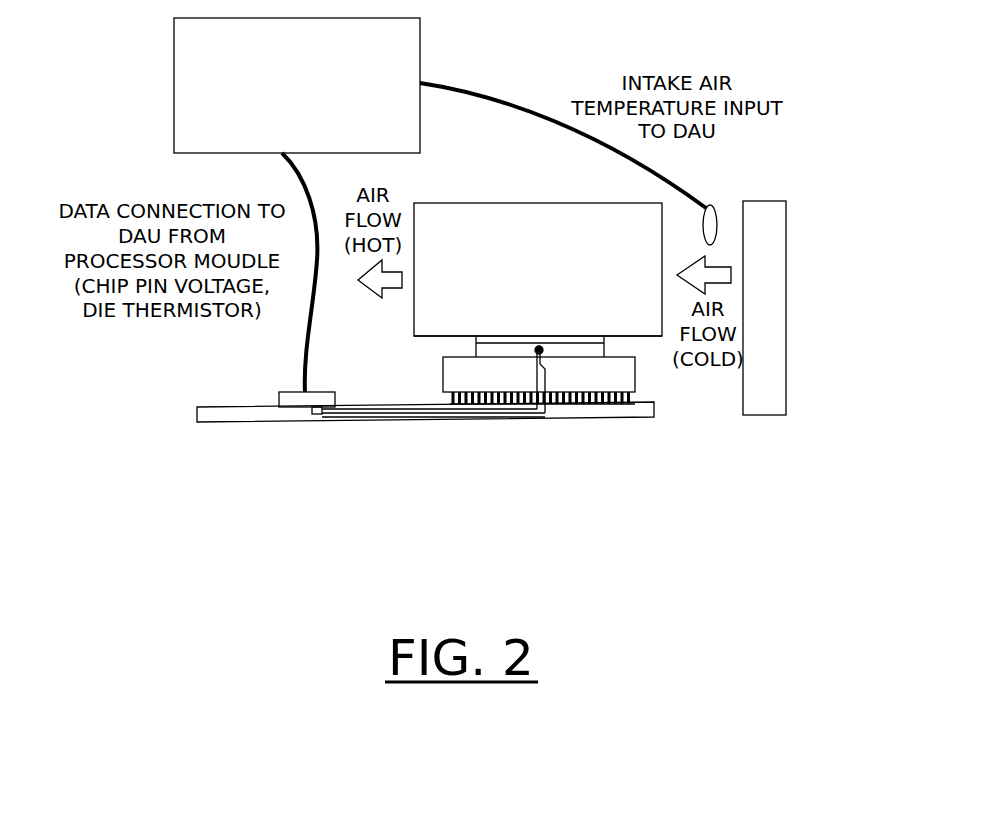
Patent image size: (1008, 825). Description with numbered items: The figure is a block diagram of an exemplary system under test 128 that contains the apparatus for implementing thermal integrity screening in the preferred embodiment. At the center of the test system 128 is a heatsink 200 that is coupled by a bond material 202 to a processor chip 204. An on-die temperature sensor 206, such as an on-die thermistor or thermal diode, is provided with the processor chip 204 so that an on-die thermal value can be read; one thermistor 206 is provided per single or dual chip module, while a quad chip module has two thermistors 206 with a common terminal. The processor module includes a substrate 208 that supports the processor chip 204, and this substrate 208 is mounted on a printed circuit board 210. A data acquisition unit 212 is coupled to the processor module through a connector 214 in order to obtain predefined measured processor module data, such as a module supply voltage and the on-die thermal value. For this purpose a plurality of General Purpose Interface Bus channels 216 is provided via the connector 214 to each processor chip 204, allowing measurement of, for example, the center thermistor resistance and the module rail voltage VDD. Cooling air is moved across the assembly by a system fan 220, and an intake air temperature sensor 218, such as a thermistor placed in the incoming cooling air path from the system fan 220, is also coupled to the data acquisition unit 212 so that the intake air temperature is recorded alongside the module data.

The system under test 128 is at (592, 45).
The heatsink 200 is at (538, 269).
The bond material 202 is at (490, 334).
The processor chip 204 is at (477, 351).
The on-die temperature sensor 206 is at (548, 351).
The substrate 208 is at (624, 373).
The printed circuit board 210 is at (233, 405).
The data acquisition unit 212 is at (297, 85).
The connector 214 is at (305, 409).
The GPIB channels 216 is at (440, 421).
The intake air temperature sensor 218 is at (719, 211).
The system fan 220 is at (766, 390).